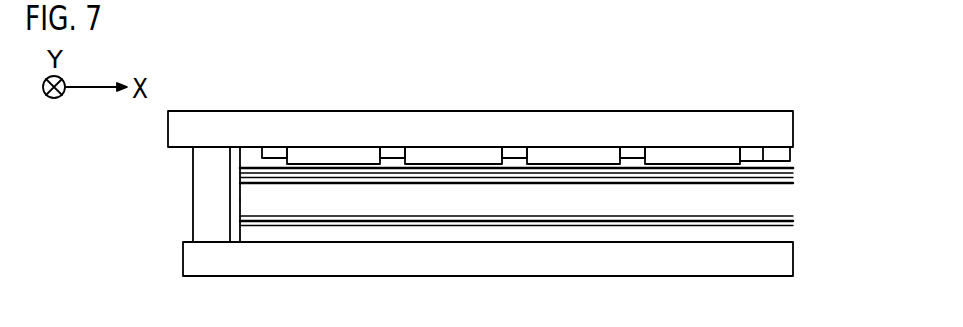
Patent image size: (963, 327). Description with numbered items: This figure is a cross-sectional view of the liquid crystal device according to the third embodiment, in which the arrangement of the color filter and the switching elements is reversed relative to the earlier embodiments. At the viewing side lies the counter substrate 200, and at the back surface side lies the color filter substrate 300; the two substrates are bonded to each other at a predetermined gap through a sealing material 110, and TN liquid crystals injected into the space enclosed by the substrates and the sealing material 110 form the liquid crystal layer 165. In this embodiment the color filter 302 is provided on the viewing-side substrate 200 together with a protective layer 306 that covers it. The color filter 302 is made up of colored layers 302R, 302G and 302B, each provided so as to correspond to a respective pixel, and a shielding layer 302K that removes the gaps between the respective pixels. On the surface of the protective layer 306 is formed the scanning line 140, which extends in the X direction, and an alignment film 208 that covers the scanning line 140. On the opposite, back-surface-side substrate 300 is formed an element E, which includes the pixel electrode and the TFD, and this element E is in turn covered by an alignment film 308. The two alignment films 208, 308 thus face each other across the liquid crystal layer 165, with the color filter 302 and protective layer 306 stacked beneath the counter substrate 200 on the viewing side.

The sealing material 110 is at (194, 166).
The alignment film 208 is at (242, 189).
The alignment film 308 is at (246, 215).
The counter substrate 200 is at (793, 120).
The color filter substrate 300 is at (793, 261).
The color filter 302 is at (797, 150).
The colored layer 302R is at (331, 153).
The colored layer 302G is at (457, 153).
The colored layer 302B is at (573, 153).
The shielding layer 302K is at (685, 153).
The protective layer 306 is at (794, 162).
The scanning line 140 is at (794, 170).
The liquid crystal layer 165 is at (793, 200).
The element E is at (793, 228).